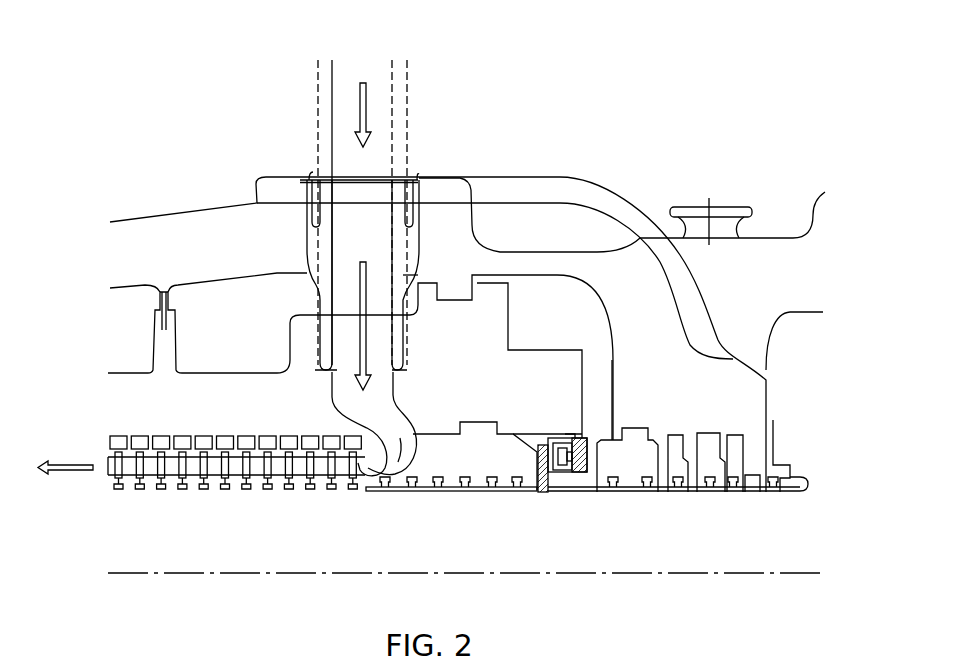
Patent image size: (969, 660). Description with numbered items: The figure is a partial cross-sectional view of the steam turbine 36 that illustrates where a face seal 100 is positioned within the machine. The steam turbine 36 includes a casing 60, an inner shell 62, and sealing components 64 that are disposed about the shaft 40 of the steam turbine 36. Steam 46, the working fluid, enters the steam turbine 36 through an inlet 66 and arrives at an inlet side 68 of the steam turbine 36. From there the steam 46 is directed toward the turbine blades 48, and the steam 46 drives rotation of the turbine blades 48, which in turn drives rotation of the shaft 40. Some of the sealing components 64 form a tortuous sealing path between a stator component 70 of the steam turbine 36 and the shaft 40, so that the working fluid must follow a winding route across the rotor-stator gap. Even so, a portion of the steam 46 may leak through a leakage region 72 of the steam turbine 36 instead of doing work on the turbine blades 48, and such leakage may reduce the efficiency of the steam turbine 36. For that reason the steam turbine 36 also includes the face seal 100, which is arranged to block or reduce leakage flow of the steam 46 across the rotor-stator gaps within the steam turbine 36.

The steam turbine 36 is at (150, 108).
The shaft 40 is at (65, 458).
The steam 46 is at (360, 75).
The turbine blades 48 is at (307, 490).
The casing 60 is at (175, 210).
The inner shell 62 is at (181, 415).
The sealing components 64 is at (443, 500).
The inlet 66 is at (313, 168).
The inlet side 68 is at (400, 490).
The stator component 70 is at (457, 462).
The leakage region 72 is at (372, 500).
The face seal 100 is at (565, 480).